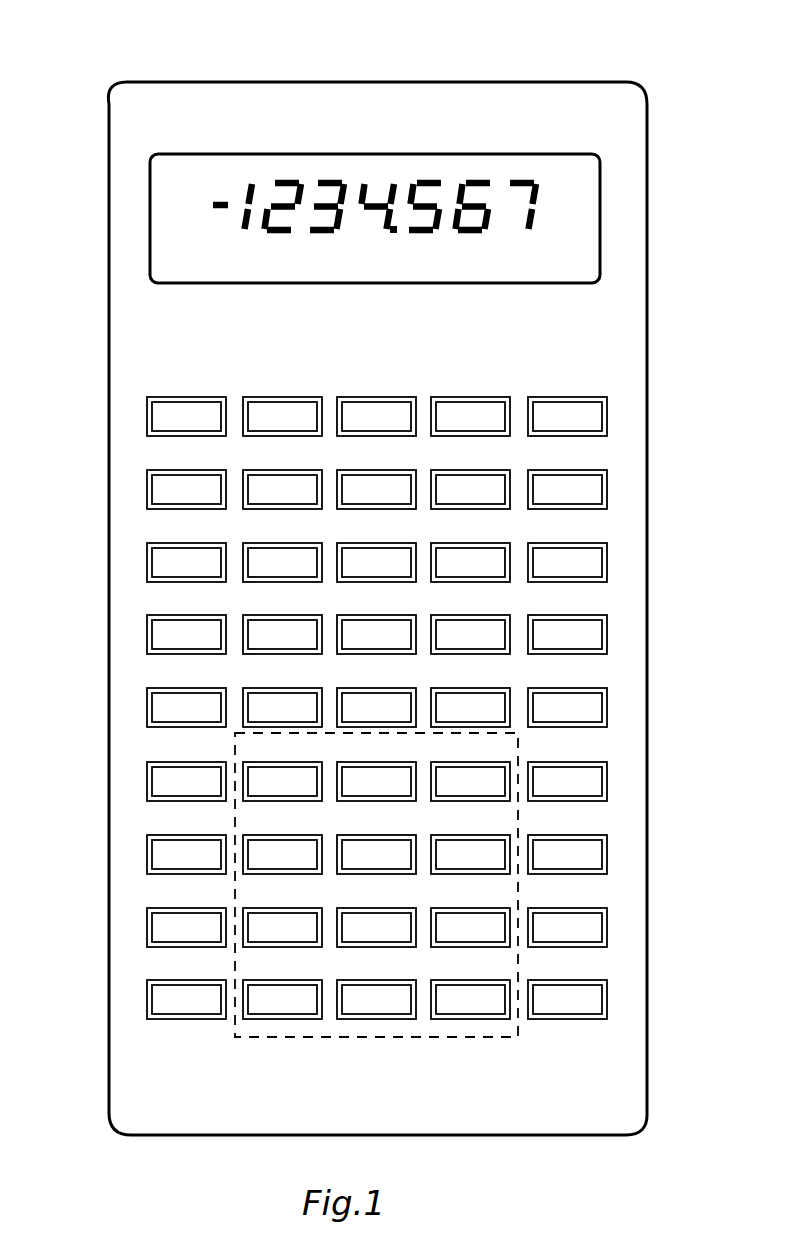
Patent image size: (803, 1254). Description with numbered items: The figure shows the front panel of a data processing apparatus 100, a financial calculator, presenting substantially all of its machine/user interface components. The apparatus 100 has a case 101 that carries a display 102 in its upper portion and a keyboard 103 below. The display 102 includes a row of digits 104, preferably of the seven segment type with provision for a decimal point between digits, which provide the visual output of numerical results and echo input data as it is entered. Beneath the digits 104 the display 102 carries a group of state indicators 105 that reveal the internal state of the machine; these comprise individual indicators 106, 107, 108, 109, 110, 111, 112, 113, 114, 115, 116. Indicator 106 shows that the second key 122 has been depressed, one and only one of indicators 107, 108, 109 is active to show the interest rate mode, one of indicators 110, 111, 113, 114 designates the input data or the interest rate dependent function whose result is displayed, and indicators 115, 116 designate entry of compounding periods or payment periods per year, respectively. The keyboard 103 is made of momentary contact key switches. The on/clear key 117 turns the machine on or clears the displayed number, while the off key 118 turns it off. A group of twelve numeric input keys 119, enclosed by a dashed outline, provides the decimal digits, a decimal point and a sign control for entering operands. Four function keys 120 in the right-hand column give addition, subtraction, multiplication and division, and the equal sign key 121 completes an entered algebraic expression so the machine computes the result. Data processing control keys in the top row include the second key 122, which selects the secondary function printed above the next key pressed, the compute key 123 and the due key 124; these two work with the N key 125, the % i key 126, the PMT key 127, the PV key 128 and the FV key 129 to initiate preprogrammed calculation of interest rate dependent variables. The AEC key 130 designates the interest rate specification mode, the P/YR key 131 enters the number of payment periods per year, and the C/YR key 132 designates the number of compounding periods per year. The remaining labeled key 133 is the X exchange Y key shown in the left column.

The data processing apparatus 100 is at (693, 102).
The case 101 is at (190, 82).
The display 102 is at (448, 153).
The keyboard 103 is at (610, 663).
The digits 104 is at (257, 183).
The state indicators 105 is at (173, 267).
The indicator 106 is at (198, 281).
The indicator 107 is at (240, 276).
The indicator 108 is at (275, 276).
The indicator 109 is at (322, 276).
The indicator 110 is at (367, 276).
The indicator 111 is at (395, 278).
The indicator 112 is at (420, 278).
The indicator 113 is at (455, 278).
The indicator 114 is at (490, 278).
The indicator 115 is at (530, 278).
The indicator 116 is at (568, 278).
The on/clear key 117 is at (550, 403).
The off key 118 is at (465, 403).
The numeric input keys 119 is at (520, 1031).
The function keys 120 is at (593, 708).
The equal sign key 121 is at (592, 998).
The second key 122 is at (182, 403).
The compute key 123 is at (286, 403).
The due key 124 is at (377, 403).
The N key 125 is at (157, 482).
The % i key 126 is at (256, 478).
The PMT key 127 is at (396, 482).
The PV key 128 is at (490, 478).
The FV key 129 is at (590, 488).
The AEC key 130 is at (280, 545).
The P/YR key 131 is at (363, 528).
The C/YR key 132 is at (468, 528).
The X exchange Y key 133 is at (157, 626).